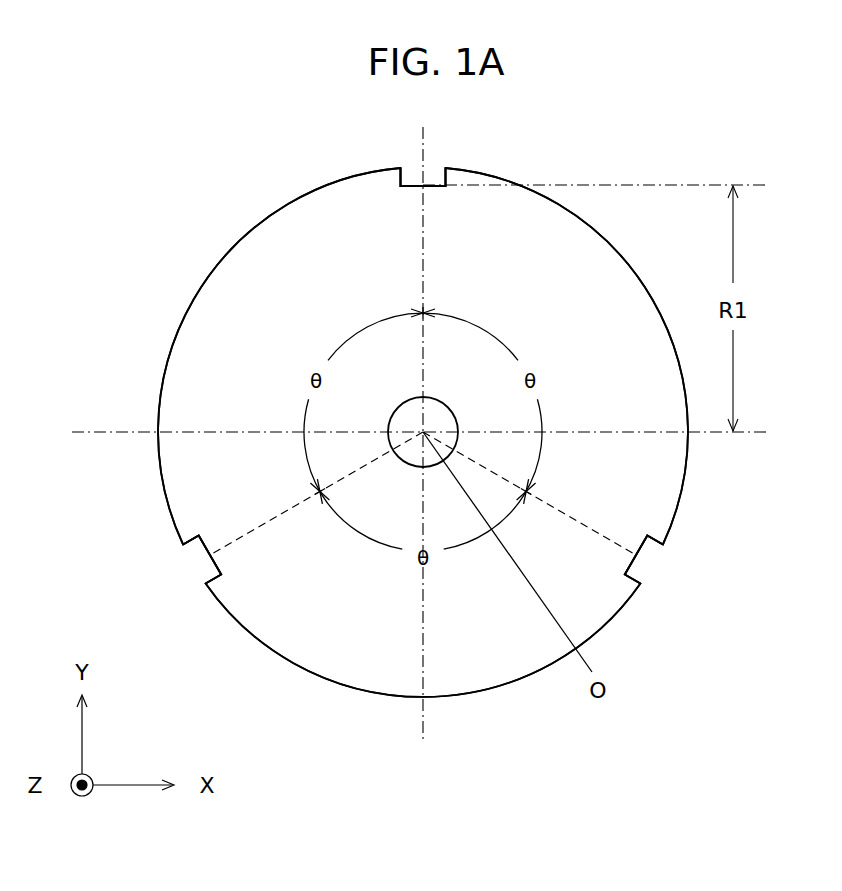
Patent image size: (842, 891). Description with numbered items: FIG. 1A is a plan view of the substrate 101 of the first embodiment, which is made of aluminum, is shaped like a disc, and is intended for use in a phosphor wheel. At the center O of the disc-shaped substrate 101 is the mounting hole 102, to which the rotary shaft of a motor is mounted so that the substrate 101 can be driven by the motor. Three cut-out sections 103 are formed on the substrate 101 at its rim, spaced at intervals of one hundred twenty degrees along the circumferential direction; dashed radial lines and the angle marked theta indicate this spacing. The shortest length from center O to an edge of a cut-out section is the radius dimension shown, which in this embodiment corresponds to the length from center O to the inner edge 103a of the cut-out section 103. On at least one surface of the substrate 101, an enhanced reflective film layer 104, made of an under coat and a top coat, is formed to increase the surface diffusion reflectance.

The substrate 101 is at (187, 317).
The mounting hole 102 is at (400, 407).
The cut-out section 103 is at (432, 176).
The inner edge 103a is at (423, 184).
The enhanced reflective film layer 104 is at (288, 293).